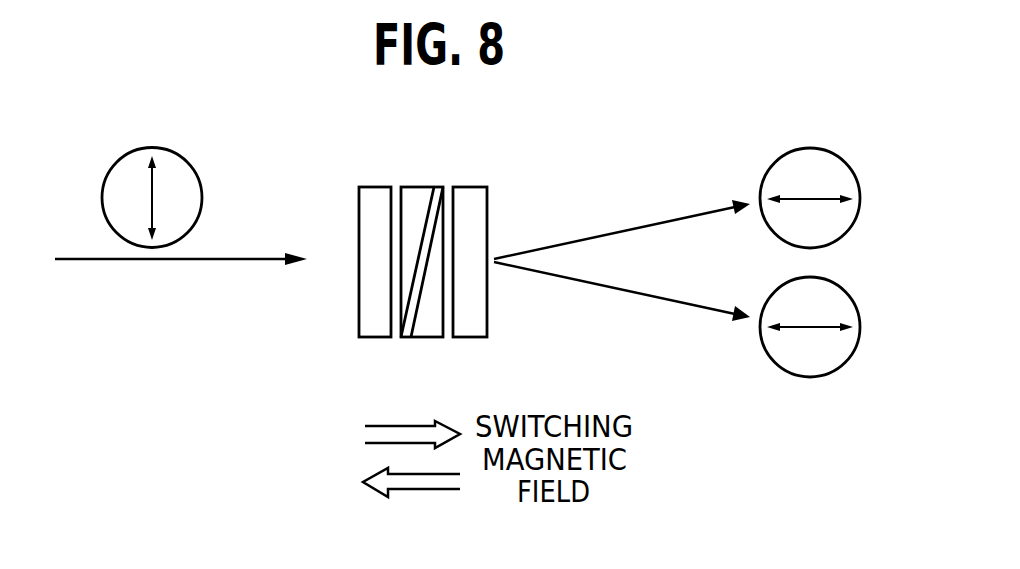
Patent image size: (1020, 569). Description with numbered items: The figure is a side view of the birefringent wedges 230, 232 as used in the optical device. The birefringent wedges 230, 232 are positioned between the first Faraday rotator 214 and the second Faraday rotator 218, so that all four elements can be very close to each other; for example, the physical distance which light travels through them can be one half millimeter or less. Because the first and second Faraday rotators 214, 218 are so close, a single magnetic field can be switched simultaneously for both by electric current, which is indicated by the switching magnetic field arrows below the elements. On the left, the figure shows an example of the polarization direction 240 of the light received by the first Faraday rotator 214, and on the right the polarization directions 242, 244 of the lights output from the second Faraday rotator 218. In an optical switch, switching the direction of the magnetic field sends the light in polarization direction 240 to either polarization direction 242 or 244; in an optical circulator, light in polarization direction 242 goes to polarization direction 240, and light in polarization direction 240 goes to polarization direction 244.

The polarization direction 240 is at (122, 158).
The first Faraday rotator 214 is at (372, 210).
The birefringent wedge 230 is at (418, 197).
The birefringent wedge 232 is at (428, 327).
The second Faraday rotator 218 is at (477, 328).
The polarization direction 242 is at (835, 155).
The polarization direction 244 is at (838, 370).